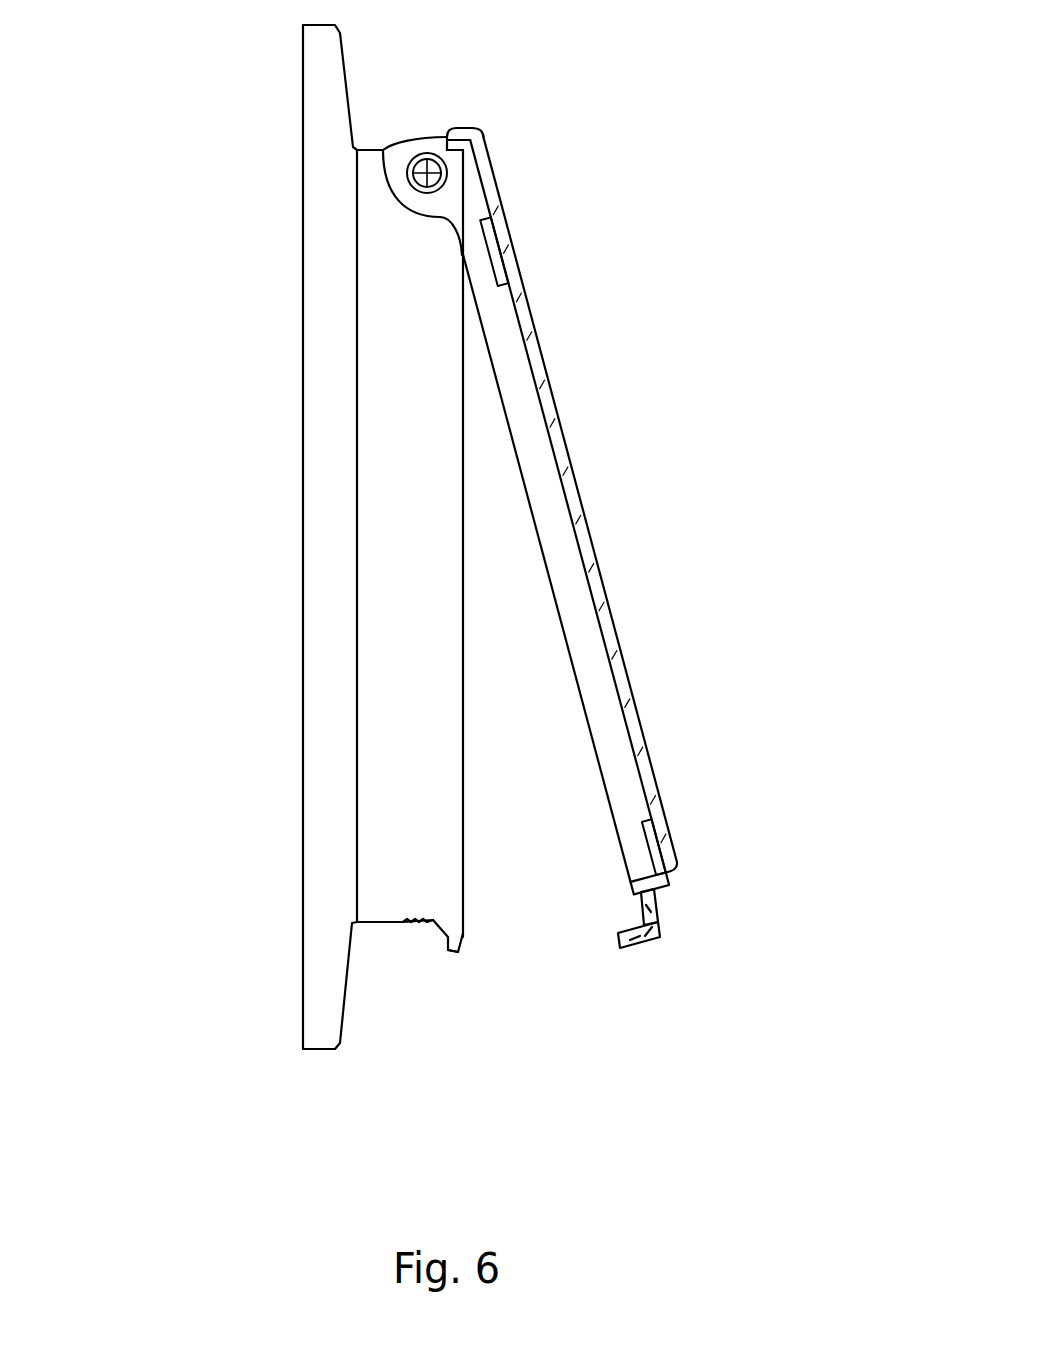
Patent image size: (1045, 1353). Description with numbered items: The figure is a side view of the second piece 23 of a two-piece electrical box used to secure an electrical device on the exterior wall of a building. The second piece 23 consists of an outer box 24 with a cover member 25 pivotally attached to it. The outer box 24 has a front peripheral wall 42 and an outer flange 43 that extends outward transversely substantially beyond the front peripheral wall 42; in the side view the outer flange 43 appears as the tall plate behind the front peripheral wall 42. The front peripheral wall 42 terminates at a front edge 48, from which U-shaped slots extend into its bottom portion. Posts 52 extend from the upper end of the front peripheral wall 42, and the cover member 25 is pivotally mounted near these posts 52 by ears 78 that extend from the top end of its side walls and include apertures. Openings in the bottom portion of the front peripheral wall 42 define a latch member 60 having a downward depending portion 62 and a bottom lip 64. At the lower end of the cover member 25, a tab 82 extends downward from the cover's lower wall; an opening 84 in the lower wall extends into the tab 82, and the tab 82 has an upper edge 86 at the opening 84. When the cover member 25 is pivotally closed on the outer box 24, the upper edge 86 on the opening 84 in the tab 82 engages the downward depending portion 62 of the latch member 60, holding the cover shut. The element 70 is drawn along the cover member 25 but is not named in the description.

The second piece 23 is at (736, 110).
The outer box 24 is at (302, 150).
The outer flange 43 is at (345, 397).
The front peripheral wall 42 is at (423, 535).
The front edge 48 is at (491, 711).
The ears 78 is at (383, 190).
The posts 52 is at (427, 165).
The cover member 25 is at (583, 500).
The strut member 70 is at (573, 592).
The upper edge 86 is at (656, 905).
The opening 84 is at (655, 908).
The tab 82 is at (658, 933).
The downward depending portion 62 is at (463, 933).
The bottom lip 64 is at (463, 947).
The latch member 60 is at (422, 945).